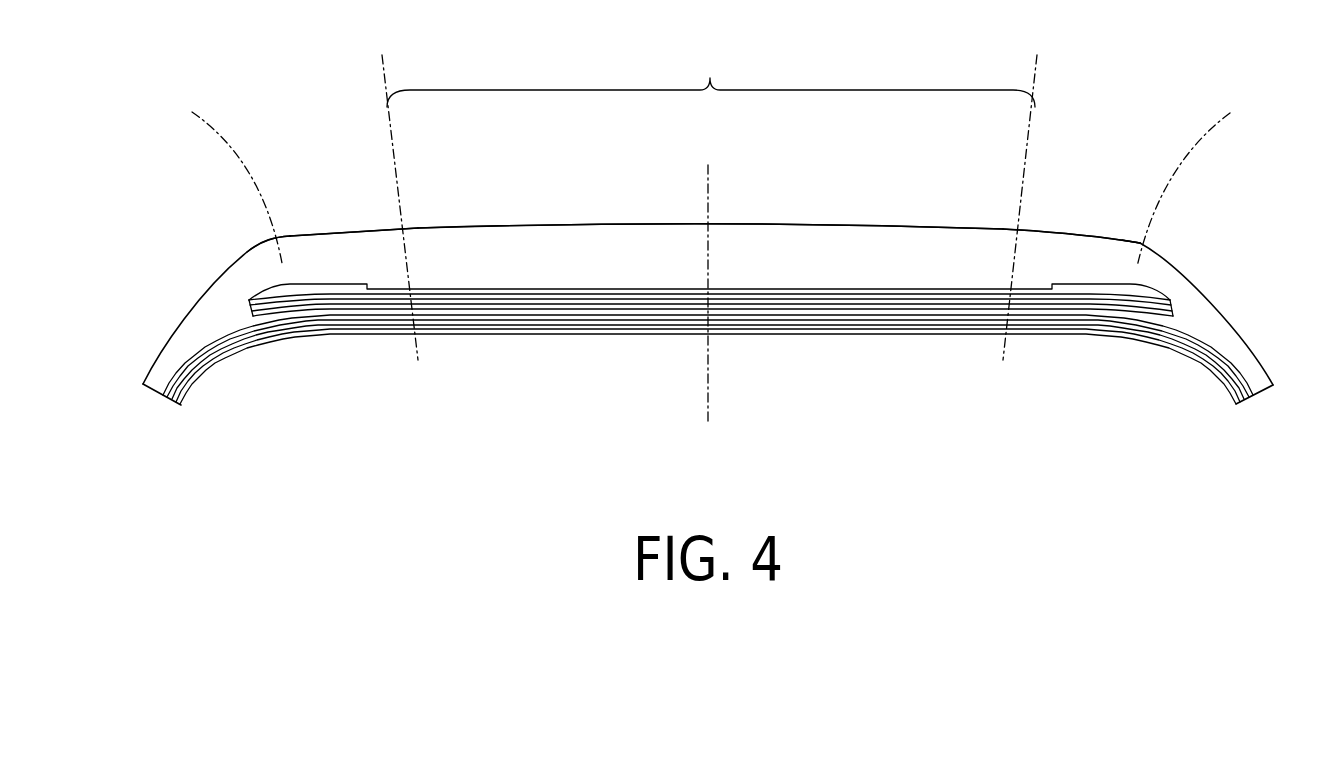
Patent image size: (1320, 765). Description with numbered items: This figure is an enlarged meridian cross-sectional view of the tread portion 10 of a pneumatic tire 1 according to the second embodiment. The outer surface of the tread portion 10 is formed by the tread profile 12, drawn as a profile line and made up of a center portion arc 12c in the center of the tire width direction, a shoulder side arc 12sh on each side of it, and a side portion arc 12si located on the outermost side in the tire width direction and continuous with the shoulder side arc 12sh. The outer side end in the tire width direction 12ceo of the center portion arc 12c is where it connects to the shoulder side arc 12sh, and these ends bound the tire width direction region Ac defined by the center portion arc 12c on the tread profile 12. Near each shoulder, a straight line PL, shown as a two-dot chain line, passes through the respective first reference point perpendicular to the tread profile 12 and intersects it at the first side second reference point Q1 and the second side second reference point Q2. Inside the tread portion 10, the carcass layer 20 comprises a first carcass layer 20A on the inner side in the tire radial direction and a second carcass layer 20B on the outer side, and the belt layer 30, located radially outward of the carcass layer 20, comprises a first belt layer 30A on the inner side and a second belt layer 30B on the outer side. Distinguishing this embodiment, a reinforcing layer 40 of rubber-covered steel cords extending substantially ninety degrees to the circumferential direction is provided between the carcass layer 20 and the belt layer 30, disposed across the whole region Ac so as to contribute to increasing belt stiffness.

The pneumatic tire 1 is at (1196, 87).
The tread portion 10 is at (662, 247).
The tread profile 12 is at (755, 225).
The center portion arc 12c is at (533, 227).
The shoulder side arc 12sh is at (337, 234).
The side portion arc 12si is at (203, 296).
The outer side end in the tire width direction of the center portion arc 12ceo is at (421, 240).
The carcass layer 20 is at (708, 395).
The first carcass layer 20A is at (657, 320).
The second carcass layer 20B is at (613, 318).
The belt layer 30 is at (711, 376).
The first belt layer 30A is at (517, 302).
The second belt layer 30B is at (469, 300).
The reinforcing layer 40 is at (848, 336).
The tire width direction region Ac is at (711, 77).
The straight line PL is at (709, 185).
The first side second reference point Q1 is at (1158, 237).
The second side second reference point Q2 is at (262, 234).